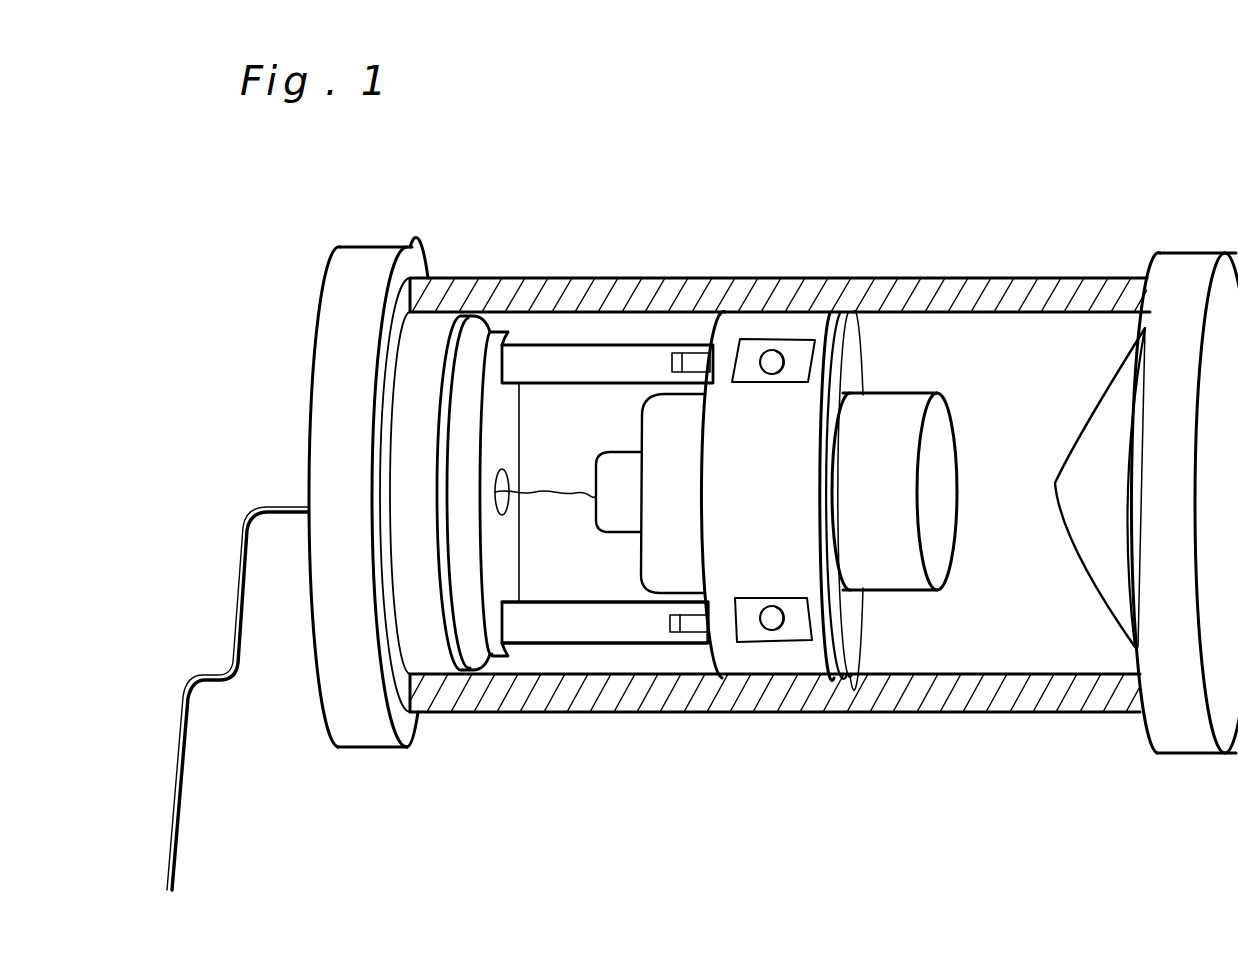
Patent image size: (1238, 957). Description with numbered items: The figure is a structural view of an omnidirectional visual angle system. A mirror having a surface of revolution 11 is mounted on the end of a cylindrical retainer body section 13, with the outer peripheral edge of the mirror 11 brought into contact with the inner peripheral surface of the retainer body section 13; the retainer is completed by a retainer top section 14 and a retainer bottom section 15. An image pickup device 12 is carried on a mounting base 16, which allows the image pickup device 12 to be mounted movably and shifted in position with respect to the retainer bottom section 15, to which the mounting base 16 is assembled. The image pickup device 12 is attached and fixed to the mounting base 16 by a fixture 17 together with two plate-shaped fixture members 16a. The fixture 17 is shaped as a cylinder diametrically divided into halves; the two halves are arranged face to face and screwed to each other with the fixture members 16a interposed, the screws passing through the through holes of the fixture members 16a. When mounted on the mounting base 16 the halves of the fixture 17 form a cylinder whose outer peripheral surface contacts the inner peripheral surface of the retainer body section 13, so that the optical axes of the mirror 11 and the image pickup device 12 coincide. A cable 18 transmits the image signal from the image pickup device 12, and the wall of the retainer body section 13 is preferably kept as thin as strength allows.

The mirror having a surface of revolution 11 is at (1075, 430).
The image pickup device 12 is at (957, 493).
The retainer body section 13 is at (780, 277).
The retainer top section 14 is at (1190, 252).
The retainer bottom section 15 is at (373, 242).
The mounting base 16 is at (513, 440).
The fixture member 16a is at (563, 615).
The fixture 17 is at (860, 350).
The cable 18 is at (188, 743).